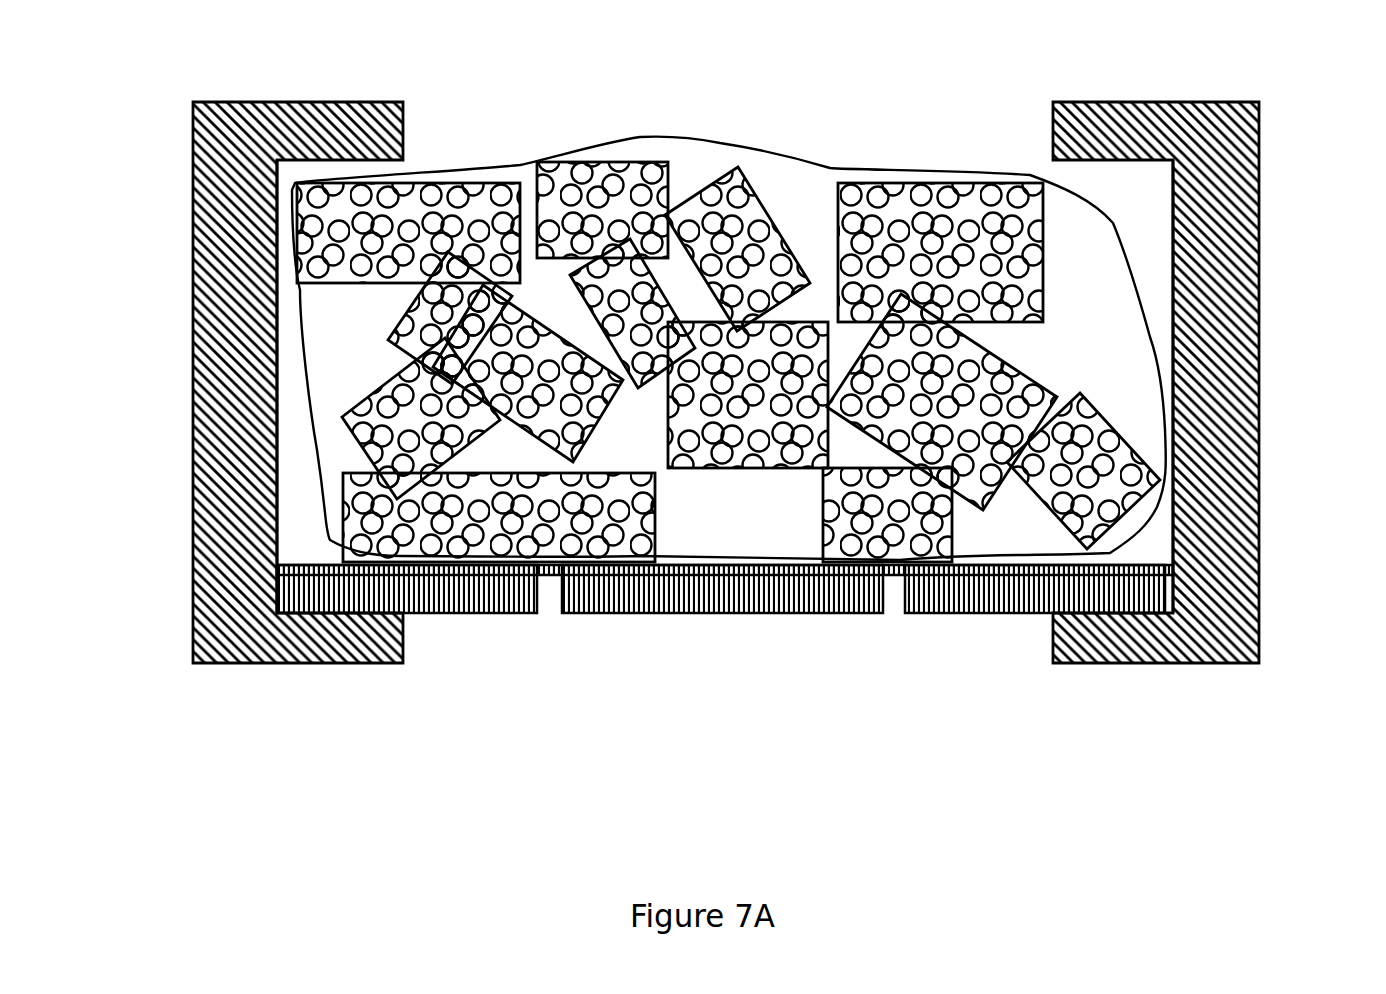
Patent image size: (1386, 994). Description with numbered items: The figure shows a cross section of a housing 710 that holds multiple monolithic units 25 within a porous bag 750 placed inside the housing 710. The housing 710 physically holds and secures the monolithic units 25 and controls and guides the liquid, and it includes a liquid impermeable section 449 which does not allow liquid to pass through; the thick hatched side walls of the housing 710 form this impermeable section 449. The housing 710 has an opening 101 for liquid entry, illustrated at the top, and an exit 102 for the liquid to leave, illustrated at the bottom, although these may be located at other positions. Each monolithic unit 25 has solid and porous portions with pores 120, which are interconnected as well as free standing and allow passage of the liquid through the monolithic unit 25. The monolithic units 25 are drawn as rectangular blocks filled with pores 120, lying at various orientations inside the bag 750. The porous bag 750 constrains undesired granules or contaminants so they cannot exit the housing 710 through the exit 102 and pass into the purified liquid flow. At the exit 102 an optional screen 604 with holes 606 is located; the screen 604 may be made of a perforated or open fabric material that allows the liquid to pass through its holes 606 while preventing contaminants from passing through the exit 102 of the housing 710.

The opening 101 is at (665, 78).
The exit 102 is at (725, 710).
The monolithic unit 25 is at (1015, 285).
The pores 120 is at (793, 277).
The liquid impermeable section 449 is at (270, 305).
The optional screen 604 is at (717, 600).
The holes 606 is at (549, 592).
The housing 710 is at (218, 397).
The porous bag 750 is at (968, 162).